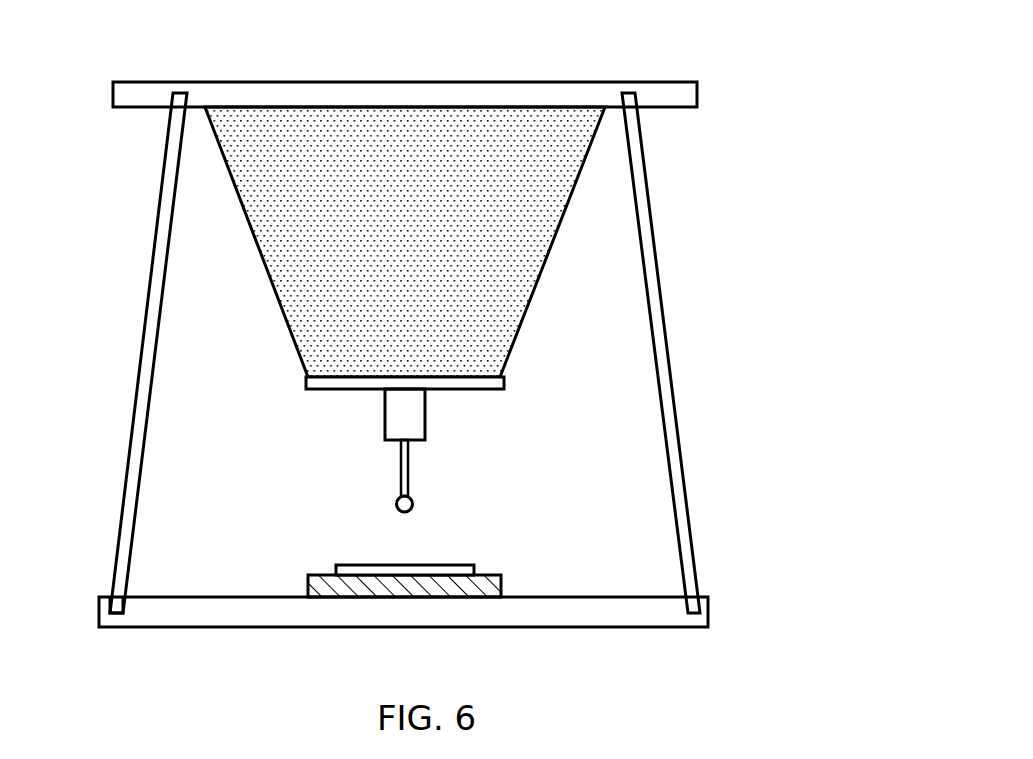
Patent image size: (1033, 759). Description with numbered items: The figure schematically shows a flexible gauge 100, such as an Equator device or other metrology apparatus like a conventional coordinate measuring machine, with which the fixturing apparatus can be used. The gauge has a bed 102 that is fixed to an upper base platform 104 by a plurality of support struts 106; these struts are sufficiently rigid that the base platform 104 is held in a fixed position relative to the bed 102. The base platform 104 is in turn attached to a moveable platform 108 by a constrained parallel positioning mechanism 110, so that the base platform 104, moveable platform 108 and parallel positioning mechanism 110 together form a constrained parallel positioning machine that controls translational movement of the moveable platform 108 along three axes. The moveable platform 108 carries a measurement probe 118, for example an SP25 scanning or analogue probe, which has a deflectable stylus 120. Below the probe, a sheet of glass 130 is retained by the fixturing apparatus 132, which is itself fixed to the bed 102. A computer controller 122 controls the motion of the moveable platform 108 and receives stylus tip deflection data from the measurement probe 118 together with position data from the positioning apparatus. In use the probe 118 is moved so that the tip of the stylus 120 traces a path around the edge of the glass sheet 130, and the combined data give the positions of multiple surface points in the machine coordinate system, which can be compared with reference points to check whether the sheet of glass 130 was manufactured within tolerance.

The flexible gauge 100 is at (784, 49).
The bed 102 is at (703, 602).
The base platform 104 is at (690, 96).
The support struts 106 is at (140, 372).
The moveable platform 108 is at (498, 383).
The constrained parallel positioning mechanism 110 is at (549, 251).
The measurement probe 118 is at (415, 417).
The deflectable stylus 120 is at (409, 480).
The computer controller 122 is at (107, 608).
The sheet of glass 130 is at (465, 571).
The fixturing apparatus 132 is at (502, 590).